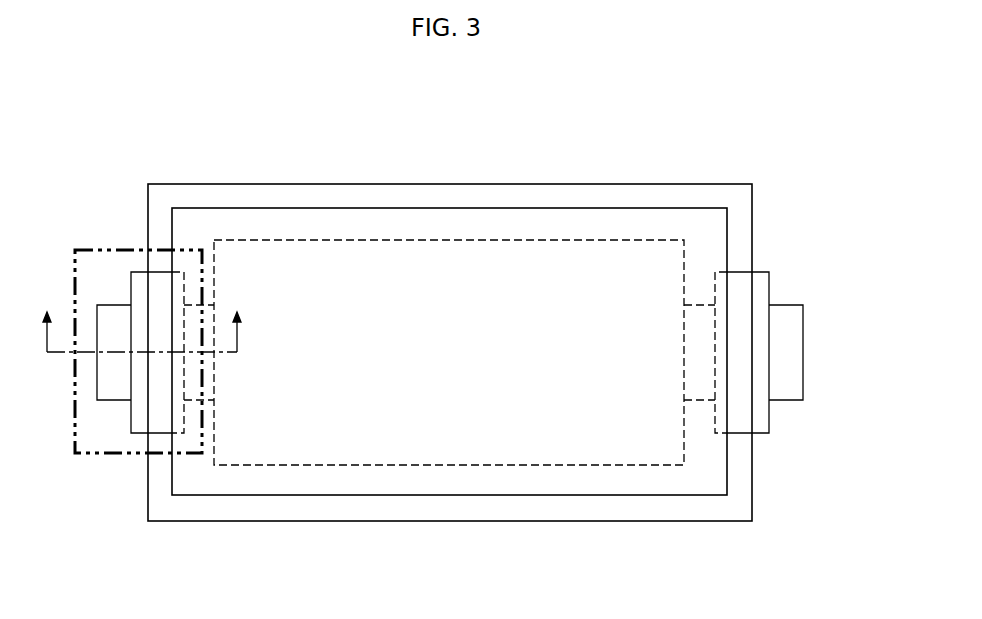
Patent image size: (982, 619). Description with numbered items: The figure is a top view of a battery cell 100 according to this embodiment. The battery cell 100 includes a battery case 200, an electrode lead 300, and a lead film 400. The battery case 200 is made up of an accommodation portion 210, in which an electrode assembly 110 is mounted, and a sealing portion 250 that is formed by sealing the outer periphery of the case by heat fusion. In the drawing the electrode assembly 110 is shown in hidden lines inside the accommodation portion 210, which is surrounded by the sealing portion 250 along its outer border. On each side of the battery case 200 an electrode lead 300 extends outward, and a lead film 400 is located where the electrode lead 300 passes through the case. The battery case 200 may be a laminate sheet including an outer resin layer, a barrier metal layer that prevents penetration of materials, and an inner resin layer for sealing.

The battery cell 100 is at (123, 114).
The electrode assembly 110 is at (465, 240).
The battery case 200 is at (450, 395).
The accommodation portion 210 is at (497, 565).
The sealing portion 250 is at (473, 505).
The electrode lead 300 is at (101, 384).
The lead film 400 is at (135, 418).